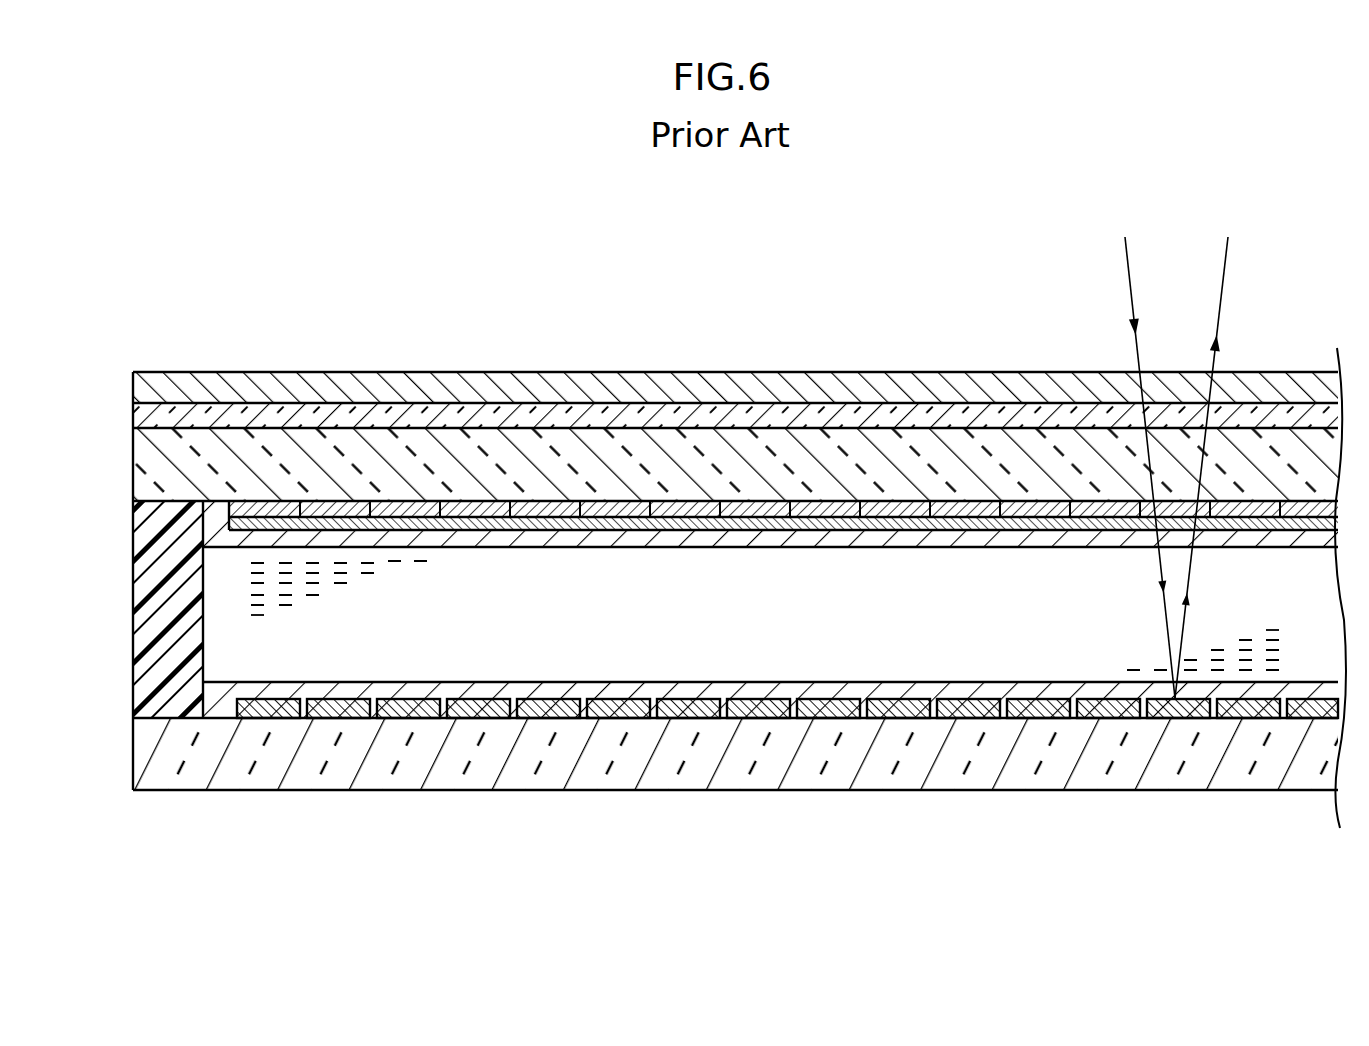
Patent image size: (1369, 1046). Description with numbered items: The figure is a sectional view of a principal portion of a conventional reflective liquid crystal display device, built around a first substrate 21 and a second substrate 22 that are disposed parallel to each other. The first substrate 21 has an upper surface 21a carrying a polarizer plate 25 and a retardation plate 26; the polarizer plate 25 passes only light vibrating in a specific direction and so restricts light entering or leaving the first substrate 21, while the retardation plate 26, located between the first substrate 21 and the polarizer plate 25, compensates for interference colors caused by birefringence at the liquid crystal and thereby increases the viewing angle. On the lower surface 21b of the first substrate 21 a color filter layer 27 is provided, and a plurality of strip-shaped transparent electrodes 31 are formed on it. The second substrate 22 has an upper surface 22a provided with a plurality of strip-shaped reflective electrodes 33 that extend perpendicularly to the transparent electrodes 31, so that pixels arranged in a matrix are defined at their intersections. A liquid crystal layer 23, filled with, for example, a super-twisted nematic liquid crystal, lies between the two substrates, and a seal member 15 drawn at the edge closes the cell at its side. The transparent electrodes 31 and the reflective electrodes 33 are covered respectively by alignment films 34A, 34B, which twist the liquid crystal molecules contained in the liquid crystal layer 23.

The sealing member 15 is at (133, 594).
The first substrate 21 is at (681, 445).
The upper surface 21a is at (567, 429).
The lower surface 21b is at (758, 501).
The second substrate 22 is at (625, 780).
The upper surface 22a is at (523, 718).
The liquid crystal layer 23 is at (972, 645).
The polarizer plate 25 is at (403, 373).
The retardation plate 26 is at (482, 404).
The color filter layer 27 is at (832, 524).
The transparent electrodes 31 is at (917, 508).
The reflective electrodes 33 is at (408, 718).
The alignment film 34A is at (1043, 540).
The alignment film 34B is at (1088, 700).